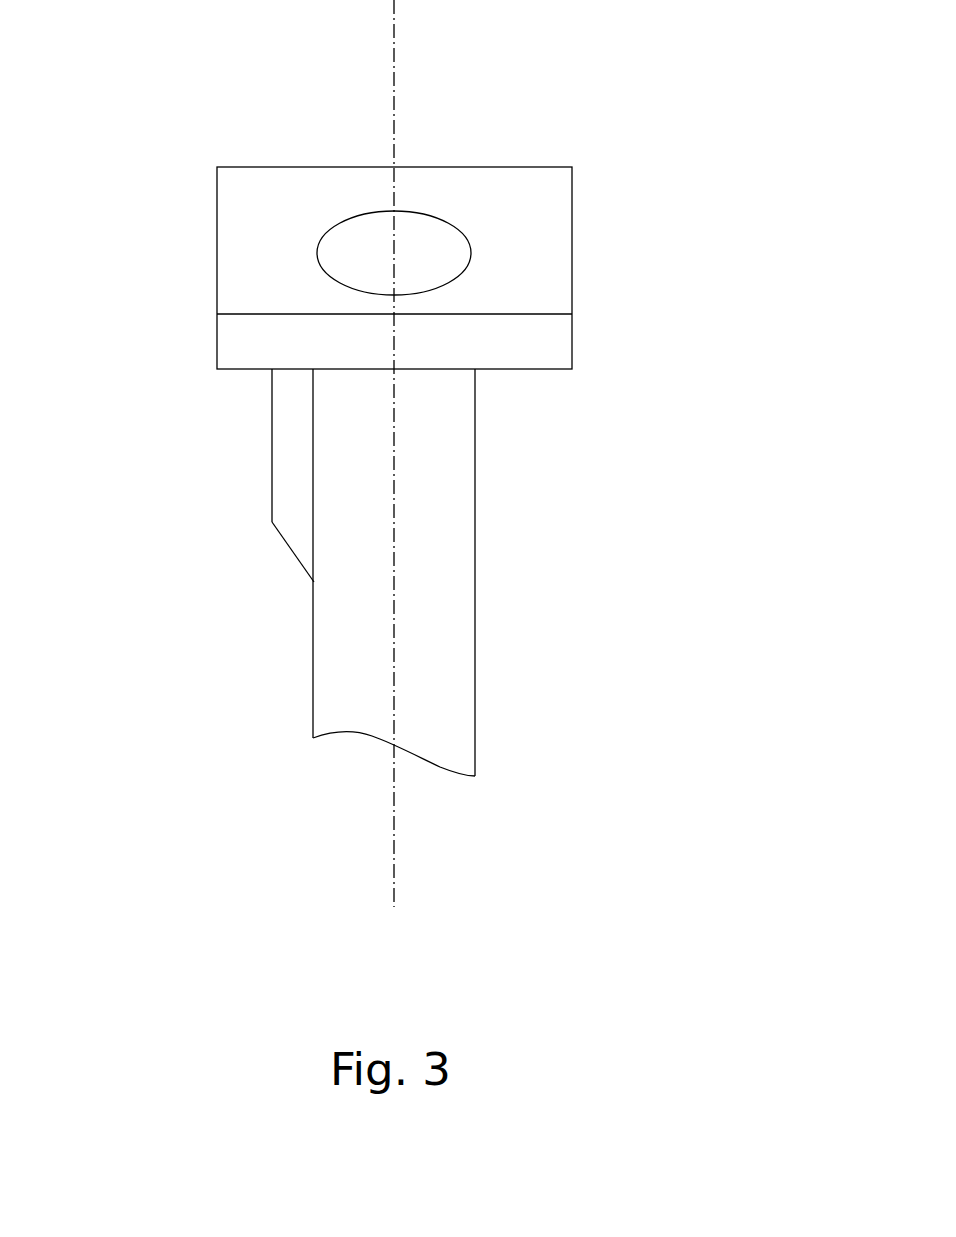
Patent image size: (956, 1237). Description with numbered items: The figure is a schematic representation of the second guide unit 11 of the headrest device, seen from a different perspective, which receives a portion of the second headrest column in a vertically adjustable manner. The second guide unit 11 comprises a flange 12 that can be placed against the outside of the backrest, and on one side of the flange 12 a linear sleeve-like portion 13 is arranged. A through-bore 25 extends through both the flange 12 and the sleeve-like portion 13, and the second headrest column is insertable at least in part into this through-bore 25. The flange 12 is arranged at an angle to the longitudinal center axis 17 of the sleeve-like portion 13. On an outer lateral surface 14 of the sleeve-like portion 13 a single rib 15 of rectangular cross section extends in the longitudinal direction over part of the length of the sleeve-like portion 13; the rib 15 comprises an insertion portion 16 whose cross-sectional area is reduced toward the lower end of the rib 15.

The second guide unit 11 is at (440, 429).
The flange 12 is at (438, 226).
The sleeve-like portion 13 is at (370, 572).
The outer lateral surface 14 is at (475, 455).
The rib 15 is at (272, 471).
The insertion portion 16 is at (300, 540).
The longitudinal center axis 17 is at (394, 68).
The through-bore 25 is at (425, 235).